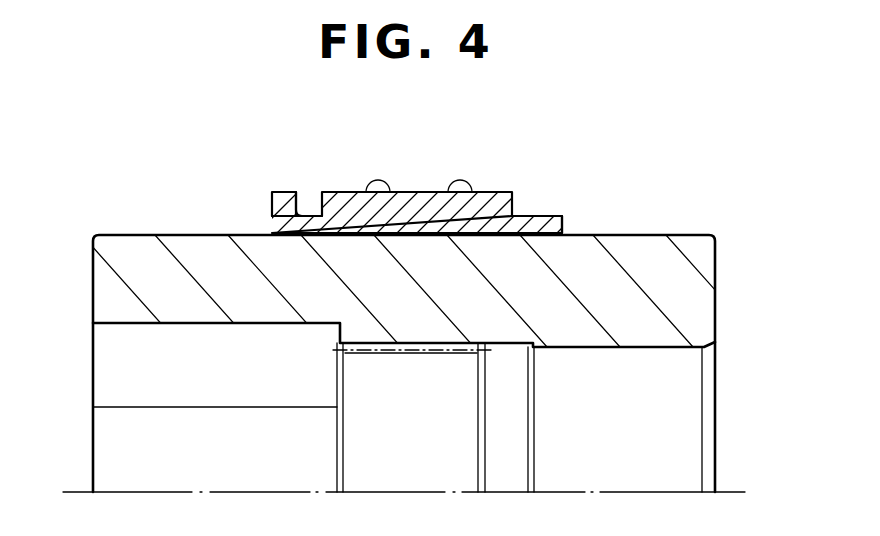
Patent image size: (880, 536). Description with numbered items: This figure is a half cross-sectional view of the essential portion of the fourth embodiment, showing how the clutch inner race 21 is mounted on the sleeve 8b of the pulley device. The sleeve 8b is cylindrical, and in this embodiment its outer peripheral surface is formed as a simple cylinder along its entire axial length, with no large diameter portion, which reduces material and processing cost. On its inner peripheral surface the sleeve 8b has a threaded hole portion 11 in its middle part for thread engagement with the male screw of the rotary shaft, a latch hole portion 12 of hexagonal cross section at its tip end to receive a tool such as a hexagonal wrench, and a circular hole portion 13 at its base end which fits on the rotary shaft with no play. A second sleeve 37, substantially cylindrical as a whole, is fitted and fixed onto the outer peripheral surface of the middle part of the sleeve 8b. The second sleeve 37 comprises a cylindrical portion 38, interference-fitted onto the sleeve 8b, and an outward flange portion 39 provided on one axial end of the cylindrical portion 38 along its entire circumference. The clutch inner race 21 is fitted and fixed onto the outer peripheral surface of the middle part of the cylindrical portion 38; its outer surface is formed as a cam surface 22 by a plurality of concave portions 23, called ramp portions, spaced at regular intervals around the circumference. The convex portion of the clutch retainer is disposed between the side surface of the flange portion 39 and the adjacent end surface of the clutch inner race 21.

The sleeve 8b is at (690, 281).
The cylindrical portion 38 is at (533, 222).
The outward flange portion 39 is at (290, 190).
The clutch inner race 21 is at (427, 200).
The second sleeve 37 is at (567, 222).
The concave portion 23 is at (372, 212).
The cam surface 22 is at (462, 215).
The latch hole portion 12 is at (145, 325).
The threaded hole portion 11 is at (373, 355).
The circular hole portion 13 is at (603, 350).